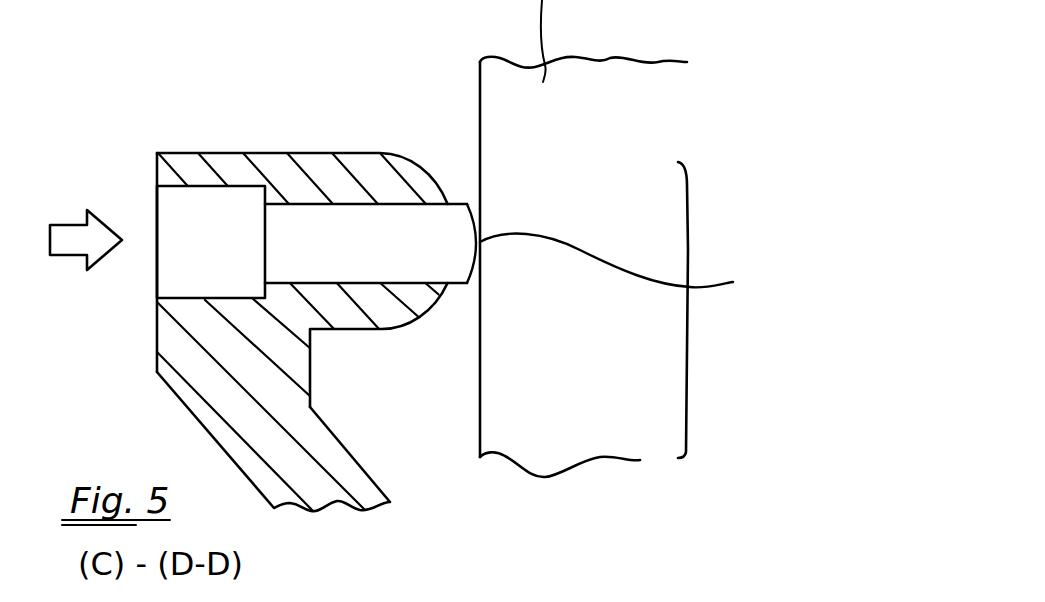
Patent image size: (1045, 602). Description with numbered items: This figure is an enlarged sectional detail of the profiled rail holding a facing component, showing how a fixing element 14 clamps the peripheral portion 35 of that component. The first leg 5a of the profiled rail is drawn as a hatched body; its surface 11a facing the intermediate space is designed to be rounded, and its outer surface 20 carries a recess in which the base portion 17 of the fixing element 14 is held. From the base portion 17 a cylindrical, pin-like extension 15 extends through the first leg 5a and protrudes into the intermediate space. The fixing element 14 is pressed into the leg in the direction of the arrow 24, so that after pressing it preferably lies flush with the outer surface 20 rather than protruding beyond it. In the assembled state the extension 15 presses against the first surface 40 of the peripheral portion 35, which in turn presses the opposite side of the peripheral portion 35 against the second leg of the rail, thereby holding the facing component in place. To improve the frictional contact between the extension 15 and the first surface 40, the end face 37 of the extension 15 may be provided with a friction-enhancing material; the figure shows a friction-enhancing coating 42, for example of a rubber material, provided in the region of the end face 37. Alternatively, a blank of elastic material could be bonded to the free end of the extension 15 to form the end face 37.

The first leg 5a is at (300, 462).
The surface of the leg 11a is at (533, 238).
The fixing element 14 is at (210, 161).
The extension 15 is at (528, 162).
The base portion 17 is at (208, 231).
The outer surface 20 is at (289, 354).
The arrow 24 is at (72, 236).
The peripheral portion 35 is at (690, 250).
The end face 37 is at (482, 212).
The first surface 40 is at (478, 357).
The friction-enhancing coating 42 is at (626, 265).